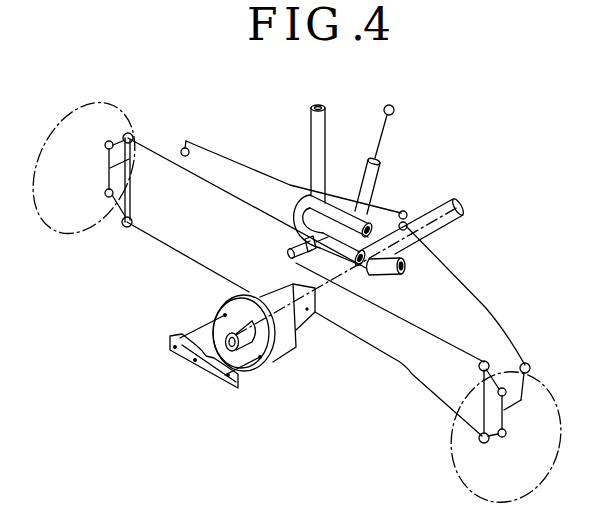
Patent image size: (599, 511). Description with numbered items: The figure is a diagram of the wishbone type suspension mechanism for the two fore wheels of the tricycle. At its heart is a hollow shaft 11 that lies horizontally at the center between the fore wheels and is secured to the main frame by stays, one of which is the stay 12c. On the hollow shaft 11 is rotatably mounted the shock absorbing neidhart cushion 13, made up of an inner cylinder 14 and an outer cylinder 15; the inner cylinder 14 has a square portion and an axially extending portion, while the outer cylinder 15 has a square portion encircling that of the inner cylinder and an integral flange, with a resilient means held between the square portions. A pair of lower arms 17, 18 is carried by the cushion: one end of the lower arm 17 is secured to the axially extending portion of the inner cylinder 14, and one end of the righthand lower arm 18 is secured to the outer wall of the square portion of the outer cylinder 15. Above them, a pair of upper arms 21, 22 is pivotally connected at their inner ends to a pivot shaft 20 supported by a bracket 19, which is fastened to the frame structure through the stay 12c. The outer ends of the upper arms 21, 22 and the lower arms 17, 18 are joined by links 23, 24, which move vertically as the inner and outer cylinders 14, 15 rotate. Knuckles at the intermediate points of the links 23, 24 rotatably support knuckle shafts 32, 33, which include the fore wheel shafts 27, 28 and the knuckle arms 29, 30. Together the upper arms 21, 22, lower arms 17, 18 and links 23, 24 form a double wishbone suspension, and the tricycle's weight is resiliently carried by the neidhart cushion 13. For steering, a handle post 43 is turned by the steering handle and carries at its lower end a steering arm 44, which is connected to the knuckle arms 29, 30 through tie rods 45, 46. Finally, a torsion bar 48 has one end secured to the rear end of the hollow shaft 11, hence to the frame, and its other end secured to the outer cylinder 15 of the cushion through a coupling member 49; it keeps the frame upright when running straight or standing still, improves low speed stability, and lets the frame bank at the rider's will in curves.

The hollow shaft 11 is at (456, 228).
The stay 12c is at (311, 128).
The neidhart cushion 13 is at (268, 287).
The inner cylinder 14 is at (307, 320).
The outer cylinder 15 is at (283, 345).
The lower arm 17 is at (374, 354).
The lower arm 18 is at (184, 254).
The bracket 19 is at (295, 215).
The pivot shaft 20 is at (290, 250).
The upper arm 21 is at (430, 342).
The upper arm 22 is at (222, 190).
The link 23 is at (482, 403).
The link 24 is at (134, 208).
The fore wheel shaft 27 is at (508, 414).
The fore wheel shaft 28 is at (110, 168).
The knuckle arm 29 is at (530, 373).
The knuckle arm 30 is at (177, 150).
The knuckle shaft 32 is at (507, 440).
The knuckle shaft 33 is at (110, 182).
The handle post 43 is at (361, 180).
The steering arm 44 is at (388, 198).
The tie rod 45 is at (482, 310).
The tie rod 46 is at (237, 160).
The torsion bar 48 is at (224, 342).
The coupling member 49 is at (186, 356).